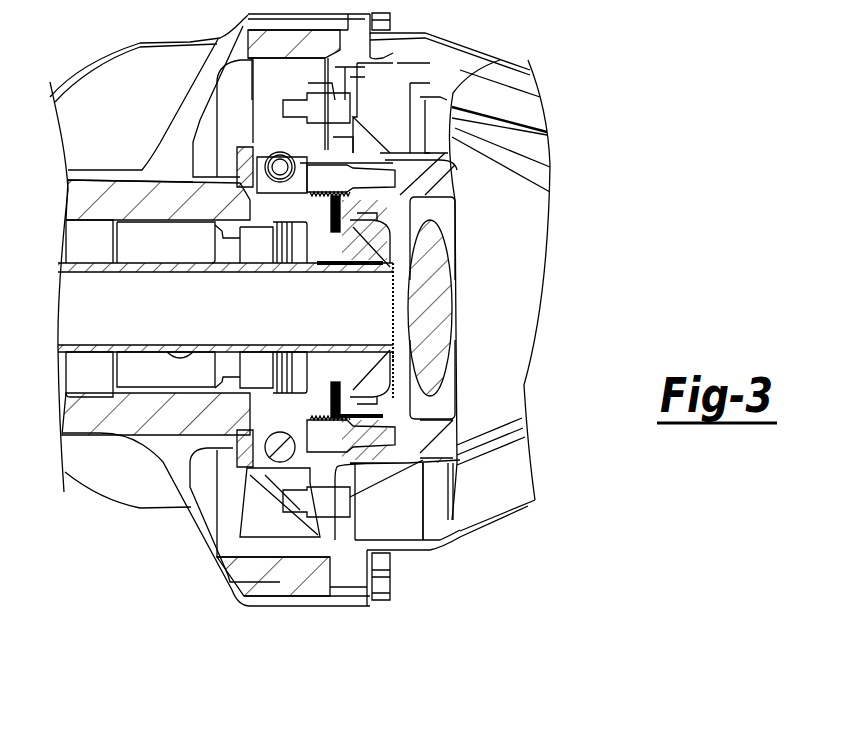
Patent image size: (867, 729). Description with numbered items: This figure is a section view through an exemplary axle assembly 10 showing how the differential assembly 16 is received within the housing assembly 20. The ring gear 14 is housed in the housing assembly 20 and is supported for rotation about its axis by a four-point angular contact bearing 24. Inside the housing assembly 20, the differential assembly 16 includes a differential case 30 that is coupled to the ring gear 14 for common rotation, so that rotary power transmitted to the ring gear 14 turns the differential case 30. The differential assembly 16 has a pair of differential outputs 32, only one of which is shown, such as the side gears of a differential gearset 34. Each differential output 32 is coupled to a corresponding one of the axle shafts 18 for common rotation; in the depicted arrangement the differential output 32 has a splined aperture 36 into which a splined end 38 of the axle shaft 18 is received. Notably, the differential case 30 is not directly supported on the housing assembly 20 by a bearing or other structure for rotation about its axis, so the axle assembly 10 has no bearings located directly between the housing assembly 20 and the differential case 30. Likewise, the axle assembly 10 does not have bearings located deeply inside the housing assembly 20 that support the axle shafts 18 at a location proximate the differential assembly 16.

The axle assembly 10 is at (600, 96).
The ring gear 14 is at (283, 90).
The differential assembly 16 is at (383, 105).
The axle shafts 18 is at (88, 347).
The housing assembly 20 is at (167, 137).
The four-point angular contact bearing 24 is at (244, 448).
The differential case 30 is at (440, 443).
The differential outputs 32 is at (357, 250).
The differential gearset 34 is at (403, 353).
The splined aperture 36 is at (455, 288).
The splined end 38 is at (431, 308).